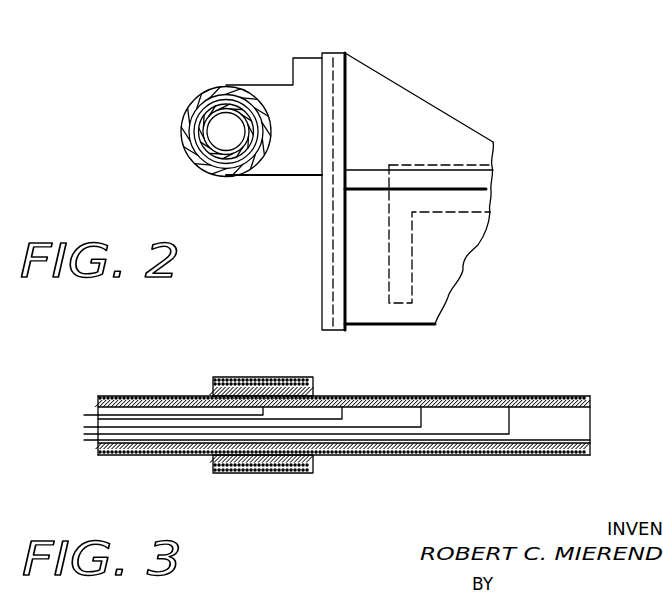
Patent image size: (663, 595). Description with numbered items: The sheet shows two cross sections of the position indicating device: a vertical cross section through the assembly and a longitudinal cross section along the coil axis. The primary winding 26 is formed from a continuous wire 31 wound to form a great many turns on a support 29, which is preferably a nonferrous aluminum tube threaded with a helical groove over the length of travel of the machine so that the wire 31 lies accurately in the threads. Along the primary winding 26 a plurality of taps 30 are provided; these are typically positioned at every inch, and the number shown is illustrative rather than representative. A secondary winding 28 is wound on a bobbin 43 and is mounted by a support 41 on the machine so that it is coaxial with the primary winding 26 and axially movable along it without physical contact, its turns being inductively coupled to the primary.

In FIG. 3, the primary winding 26 is at (515, 396).
In FIG. 3, the secondary winding 28 is at (255, 378).
In FIG. 2, the support 29 is at (220, 173).
In FIG. 3, the support 29 is at (98, 396).
In FIG. 3, the taps 30 is at (425, 396).
In FIG. 2, the wire 31 is at (183, 143).
In FIG. 3, the wire 31 is at (108, 397).
In FIG. 2, the support 41 is at (284, 90).
In FIG. 2, the bobbin 43 is at (215, 87).
In FIG. 3, the bobbin 43 is at (315, 394).